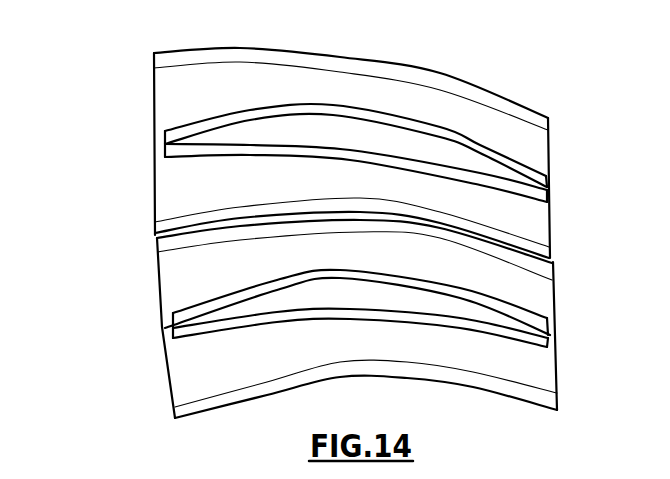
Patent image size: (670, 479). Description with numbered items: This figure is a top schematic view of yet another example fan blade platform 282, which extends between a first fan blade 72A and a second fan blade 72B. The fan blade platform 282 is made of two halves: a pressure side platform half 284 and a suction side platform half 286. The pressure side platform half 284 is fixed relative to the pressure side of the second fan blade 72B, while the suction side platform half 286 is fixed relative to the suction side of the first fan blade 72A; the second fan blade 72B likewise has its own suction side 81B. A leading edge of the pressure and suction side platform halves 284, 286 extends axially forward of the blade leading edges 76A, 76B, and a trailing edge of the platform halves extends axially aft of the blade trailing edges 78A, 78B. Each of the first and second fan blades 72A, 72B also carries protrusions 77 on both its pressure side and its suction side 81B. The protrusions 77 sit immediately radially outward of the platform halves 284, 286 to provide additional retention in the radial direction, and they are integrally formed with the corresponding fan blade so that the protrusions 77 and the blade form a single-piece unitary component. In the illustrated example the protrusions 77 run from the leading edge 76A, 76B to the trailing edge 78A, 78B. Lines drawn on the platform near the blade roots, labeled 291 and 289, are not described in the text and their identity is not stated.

The fan blade platform 282 is at (116, 212).
The suction side platform half 286 is at (192, 83).
The pressure side platform half 284 is at (208, 178).
The upper carrier wall 291 is at (523, 241).
The lower carrier wall 289 is at (534, 264).
The second fan blade 72B is at (223, 130).
The suction side 81B is at (428, 130).
The leading edge 76B is at (549, 187).
The trailing edge 78B is at (165, 144).
The first fan blade 72A is at (243, 307).
The protrusions 77 is at (362, 106).
The leading edge 76A is at (551, 334).
The trailing edge 78A is at (172, 329).